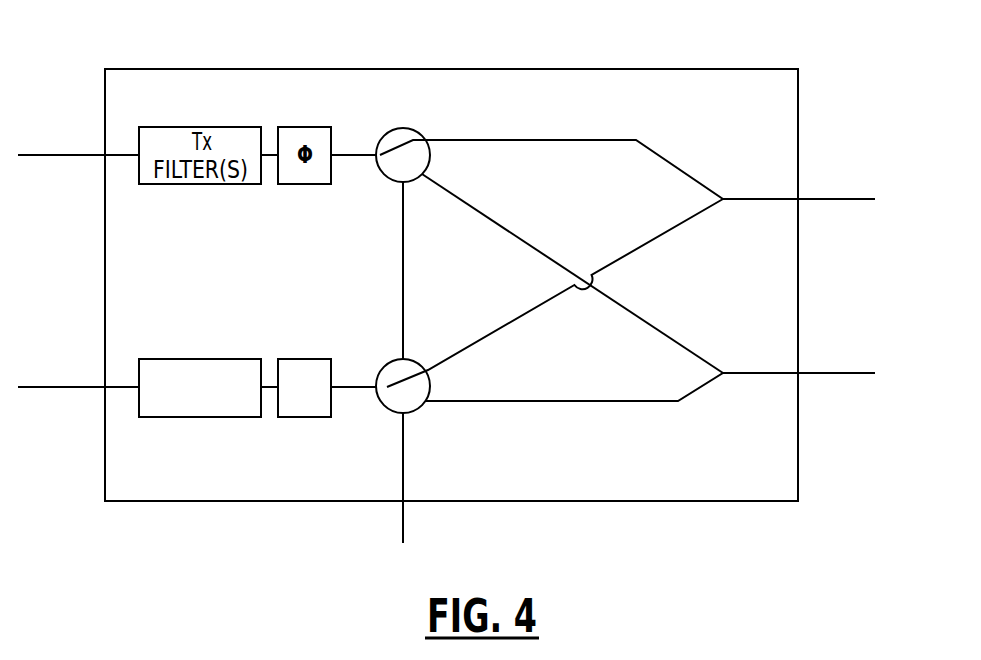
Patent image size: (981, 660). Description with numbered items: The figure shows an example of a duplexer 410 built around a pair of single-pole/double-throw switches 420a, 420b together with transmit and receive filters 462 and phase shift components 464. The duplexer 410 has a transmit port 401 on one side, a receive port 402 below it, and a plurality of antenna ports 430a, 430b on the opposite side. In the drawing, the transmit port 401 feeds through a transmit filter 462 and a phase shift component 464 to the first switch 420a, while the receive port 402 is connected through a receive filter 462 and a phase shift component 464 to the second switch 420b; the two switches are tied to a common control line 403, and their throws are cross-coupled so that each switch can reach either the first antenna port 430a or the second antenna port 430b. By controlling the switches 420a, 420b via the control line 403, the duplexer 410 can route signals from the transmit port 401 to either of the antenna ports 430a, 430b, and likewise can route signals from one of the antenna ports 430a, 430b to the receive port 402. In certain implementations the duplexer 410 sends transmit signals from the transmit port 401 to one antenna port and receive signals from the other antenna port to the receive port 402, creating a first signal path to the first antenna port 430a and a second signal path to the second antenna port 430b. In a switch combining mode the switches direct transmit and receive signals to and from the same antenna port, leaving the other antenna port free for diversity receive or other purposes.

The duplexer 410 is at (282, 68).
The transmit port 401 is at (87, 155).
The receive port 402 is at (87, 387).
The control line 403 is at (404, 518).
The single-pole/double-throw switch 420a is at (397, 182).
The single-pole/double-throw switch 420b is at (395, 360).
The first antenna port 430a is at (857, 198).
The second antenna port 430b is at (857, 373).
The transmit and receive filters 462 is at (207, 440).
The phase shift components 464 is at (301, 440).